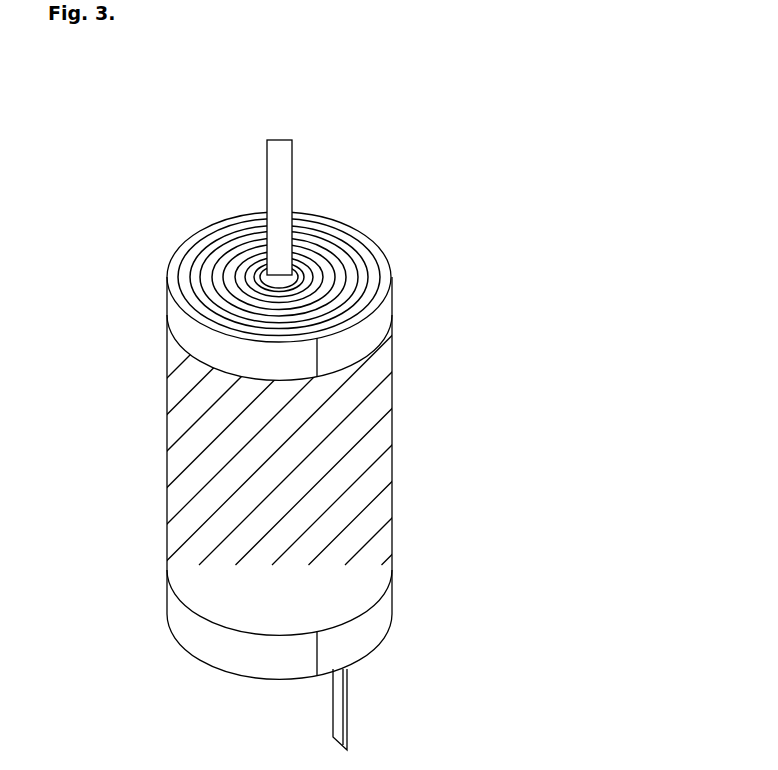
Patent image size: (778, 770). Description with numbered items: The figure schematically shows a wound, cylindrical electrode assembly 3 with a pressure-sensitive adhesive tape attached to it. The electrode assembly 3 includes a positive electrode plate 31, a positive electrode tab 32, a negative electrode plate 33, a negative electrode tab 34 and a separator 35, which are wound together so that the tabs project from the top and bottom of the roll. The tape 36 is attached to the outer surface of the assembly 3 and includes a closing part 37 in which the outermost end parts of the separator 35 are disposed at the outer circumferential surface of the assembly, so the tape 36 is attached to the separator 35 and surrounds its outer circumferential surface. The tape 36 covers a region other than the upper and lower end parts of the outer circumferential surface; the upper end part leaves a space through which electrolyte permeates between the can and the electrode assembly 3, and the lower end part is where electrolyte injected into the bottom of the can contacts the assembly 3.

The electrode assembly 3 is at (182, 198).
The positive electrode plate 31 is at (393, 291).
The positive electrode tab 32 is at (280, 140).
The negative electrode plate 33 is at (376, 245).
The negative electrode tab 34 is at (347, 706).
The separator 35 is at (380, 268).
The pressure-sensitive adhesive tape 36 is at (372, 531).
The closing part 37 is at (307, 653).